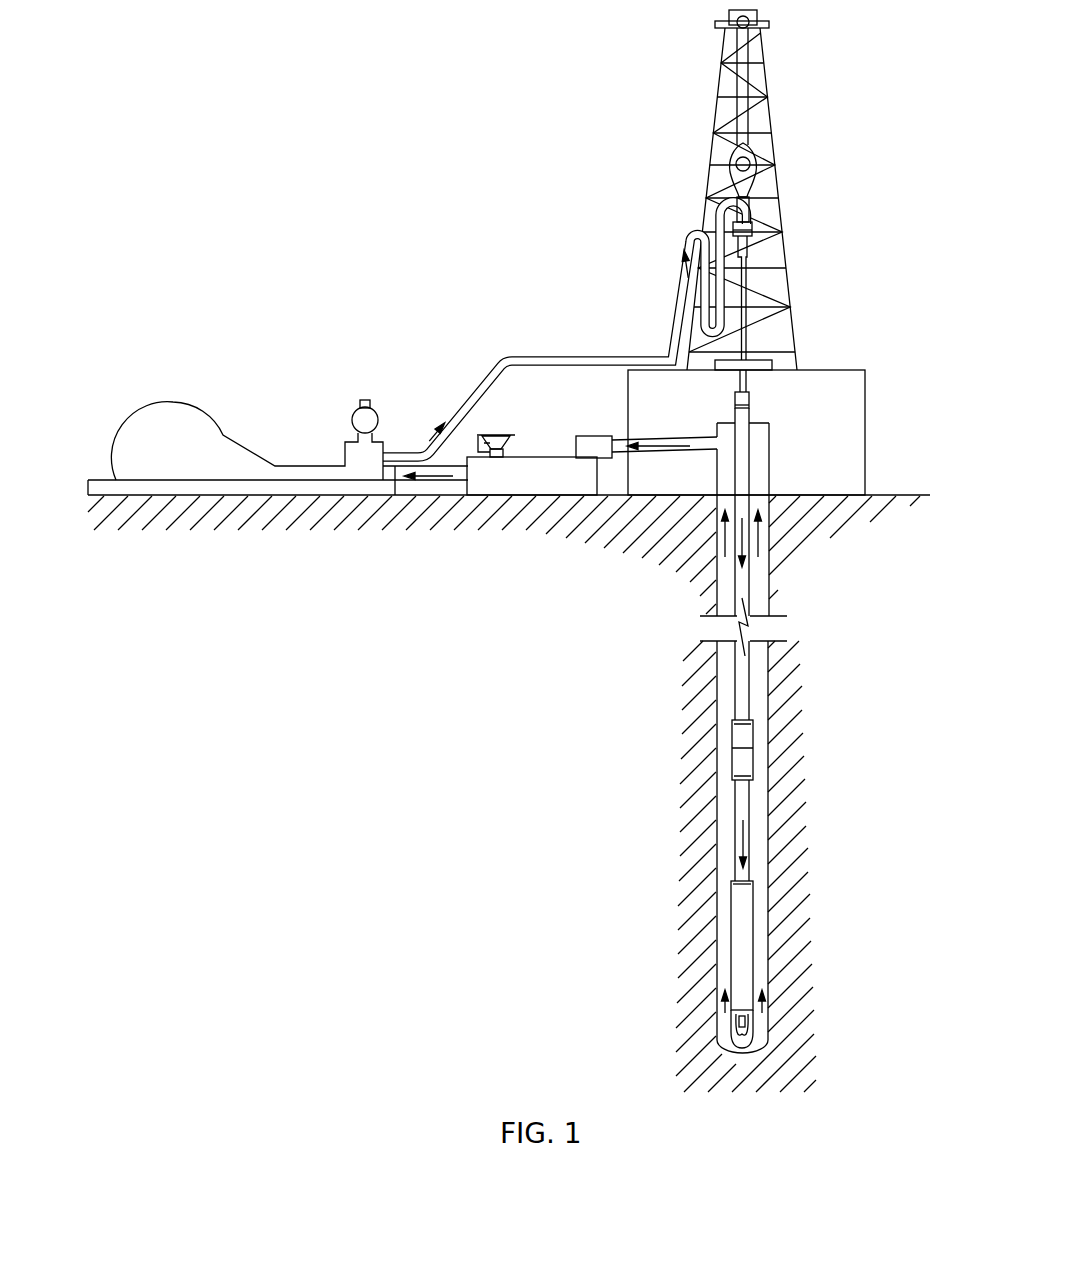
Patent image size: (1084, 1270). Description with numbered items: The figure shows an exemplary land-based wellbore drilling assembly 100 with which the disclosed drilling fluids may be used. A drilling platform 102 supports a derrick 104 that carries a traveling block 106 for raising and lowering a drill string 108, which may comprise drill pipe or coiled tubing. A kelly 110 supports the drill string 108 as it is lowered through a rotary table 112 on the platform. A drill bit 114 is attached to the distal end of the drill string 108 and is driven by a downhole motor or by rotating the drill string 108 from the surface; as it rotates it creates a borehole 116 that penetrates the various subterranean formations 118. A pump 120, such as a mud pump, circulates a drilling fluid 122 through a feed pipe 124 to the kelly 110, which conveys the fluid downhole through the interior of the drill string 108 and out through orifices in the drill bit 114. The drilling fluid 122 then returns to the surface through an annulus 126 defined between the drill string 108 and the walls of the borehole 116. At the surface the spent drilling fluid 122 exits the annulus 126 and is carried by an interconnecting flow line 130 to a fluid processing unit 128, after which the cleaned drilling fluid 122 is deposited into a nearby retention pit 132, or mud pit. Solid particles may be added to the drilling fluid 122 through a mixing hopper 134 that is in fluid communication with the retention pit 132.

The wellbore drilling assembly 100 is at (467, 97).
The drilling platform 102 is at (866, 384).
The derrick 104 is at (770, 113).
The traveling block 106 is at (757, 152).
The drill string 108 is at (745, 588).
The kelly 110 is at (745, 280).
The rotary table 112 is at (772, 364).
The drill bit 114 is at (757, 1027).
The borehole 116 is at (769, 690).
The subterranean formations 118 is at (606, 728).
The pump 120 is at (185, 460).
The drilling fluid 122 is at (402, 456).
The feed pipe 124 is at (505, 358).
The annulus 126 is at (757, 837).
The fluid processing unit 128 is at (589, 440).
The flow line 130 is at (698, 452).
The retention pit 132 is at (546, 486).
The mixing hopper 134 is at (488, 448).